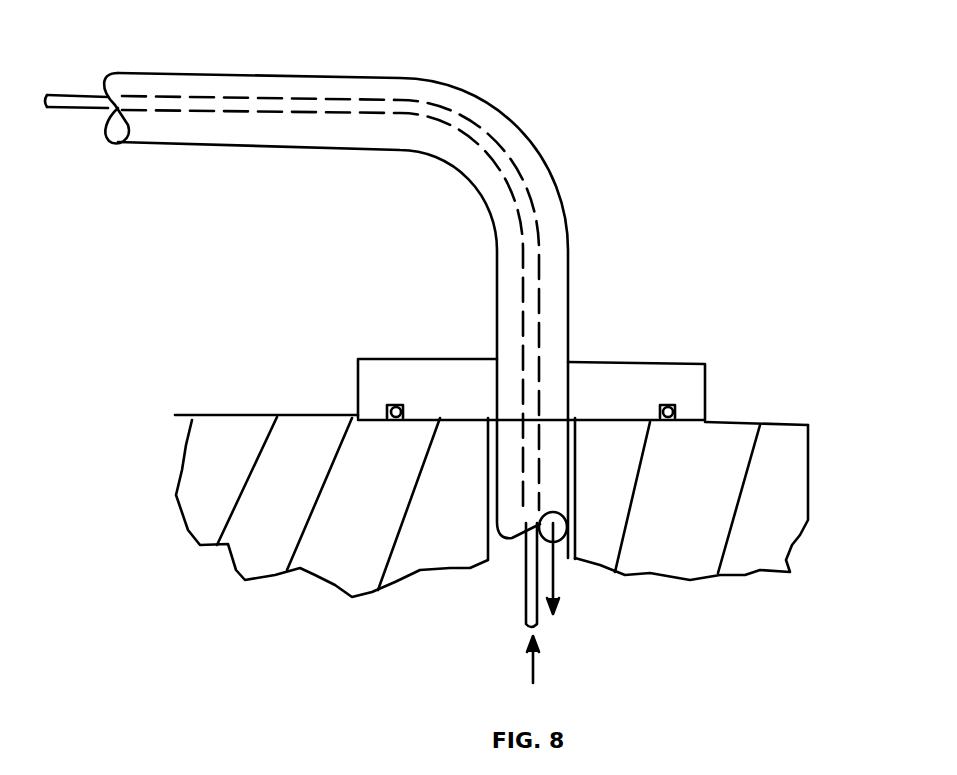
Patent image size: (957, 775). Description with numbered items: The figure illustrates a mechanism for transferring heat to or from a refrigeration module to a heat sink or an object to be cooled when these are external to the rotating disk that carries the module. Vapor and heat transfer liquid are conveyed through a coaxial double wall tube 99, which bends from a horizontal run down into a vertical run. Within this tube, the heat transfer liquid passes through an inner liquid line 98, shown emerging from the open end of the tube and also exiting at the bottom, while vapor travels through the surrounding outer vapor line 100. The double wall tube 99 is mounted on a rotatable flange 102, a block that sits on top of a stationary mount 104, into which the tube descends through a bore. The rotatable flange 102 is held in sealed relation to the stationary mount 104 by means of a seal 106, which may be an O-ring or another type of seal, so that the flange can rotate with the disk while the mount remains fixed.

The inner liquid line 98 is at (75, 97).
The coaxial double wall tube 99 is at (437, 82).
The outer vapor line 100 is at (197, 144).
The rotatable flange 102 is at (642, 360).
The stationary mount 104 is at (800, 542).
The seal 106 is at (677, 410).